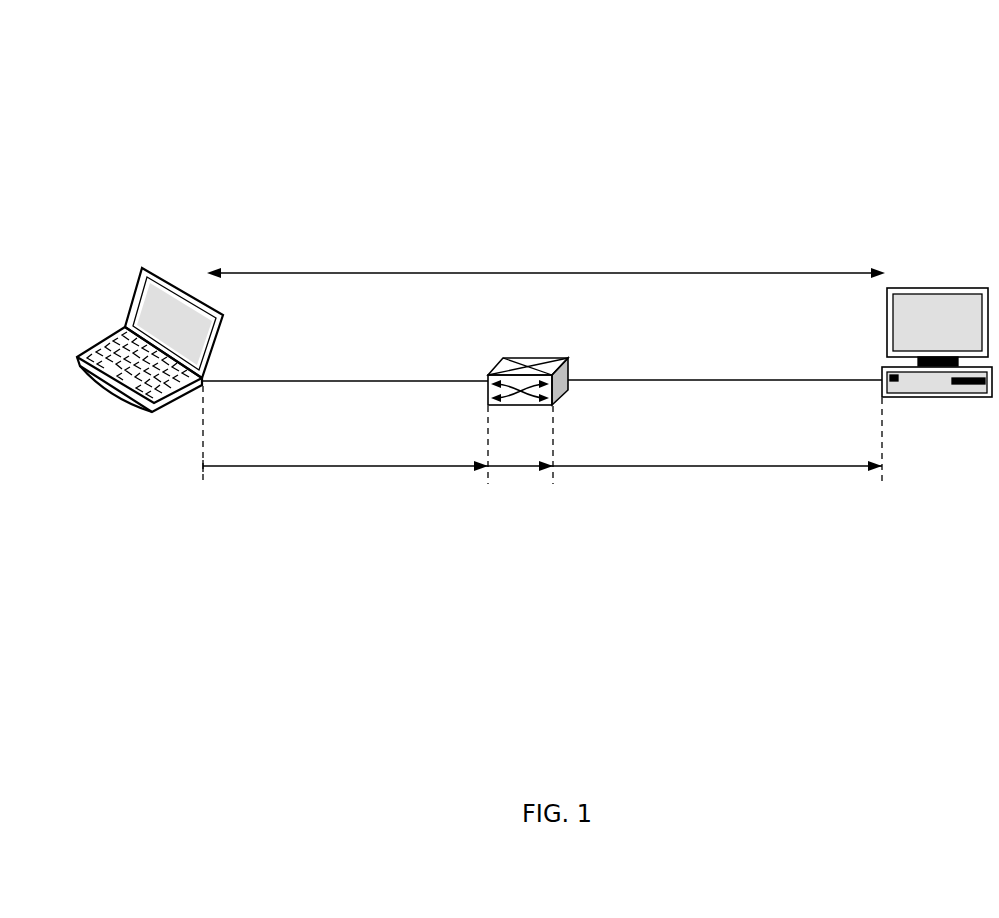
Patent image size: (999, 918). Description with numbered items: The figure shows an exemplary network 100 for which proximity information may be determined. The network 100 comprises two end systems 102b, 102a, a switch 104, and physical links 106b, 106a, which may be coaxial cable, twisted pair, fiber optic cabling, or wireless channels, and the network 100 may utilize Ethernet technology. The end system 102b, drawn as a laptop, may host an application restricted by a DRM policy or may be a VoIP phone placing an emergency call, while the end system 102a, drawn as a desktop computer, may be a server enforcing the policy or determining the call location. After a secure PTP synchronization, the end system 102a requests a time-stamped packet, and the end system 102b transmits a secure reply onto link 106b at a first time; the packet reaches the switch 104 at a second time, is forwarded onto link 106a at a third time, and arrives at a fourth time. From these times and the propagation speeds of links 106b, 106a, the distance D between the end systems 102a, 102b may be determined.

The network 100 is at (204, 114).
The end system 102b is at (168, 276).
The end system 102a is at (930, 288).
The switch 104 is at (528, 360).
The physical link 106b is at (322, 381).
The physical link 106a is at (712, 380).